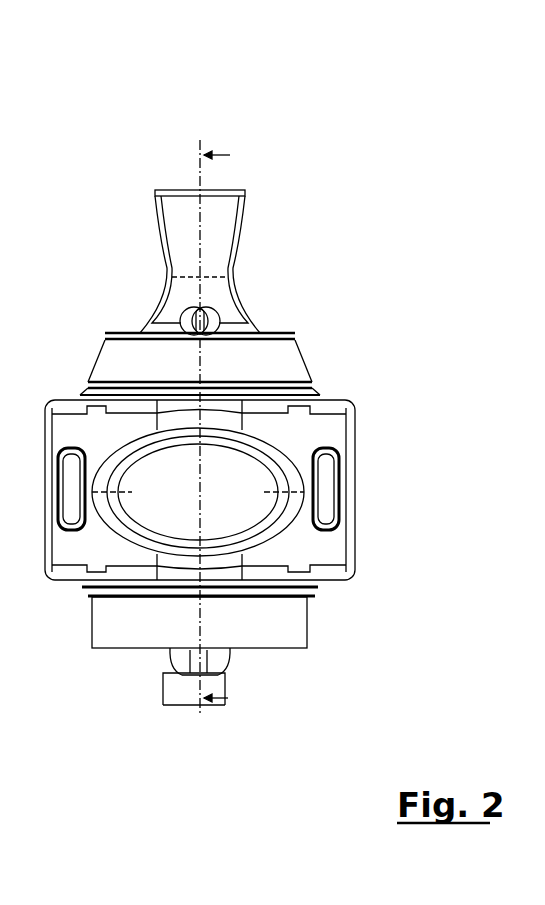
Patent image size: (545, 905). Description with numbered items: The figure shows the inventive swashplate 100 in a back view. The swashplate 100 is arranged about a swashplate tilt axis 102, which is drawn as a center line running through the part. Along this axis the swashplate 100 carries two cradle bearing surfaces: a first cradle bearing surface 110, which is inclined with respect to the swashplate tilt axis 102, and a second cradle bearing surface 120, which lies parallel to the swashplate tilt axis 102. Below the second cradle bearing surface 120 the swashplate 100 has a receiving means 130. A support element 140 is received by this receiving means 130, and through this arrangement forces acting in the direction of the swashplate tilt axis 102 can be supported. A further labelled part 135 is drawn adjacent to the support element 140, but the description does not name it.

The swashplate 100 is at (320, 207).
The swashplate tilt axis 102 is at (201, 140).
The first cradle bearing surface 110 is at (280, 368).
The second cradle bearing surface 120 is at (280, 627).
The receiving means 130 is at (228, 660).
The fastening nut 135 is at (197, 672).
The support element 140 is at (180, 697).